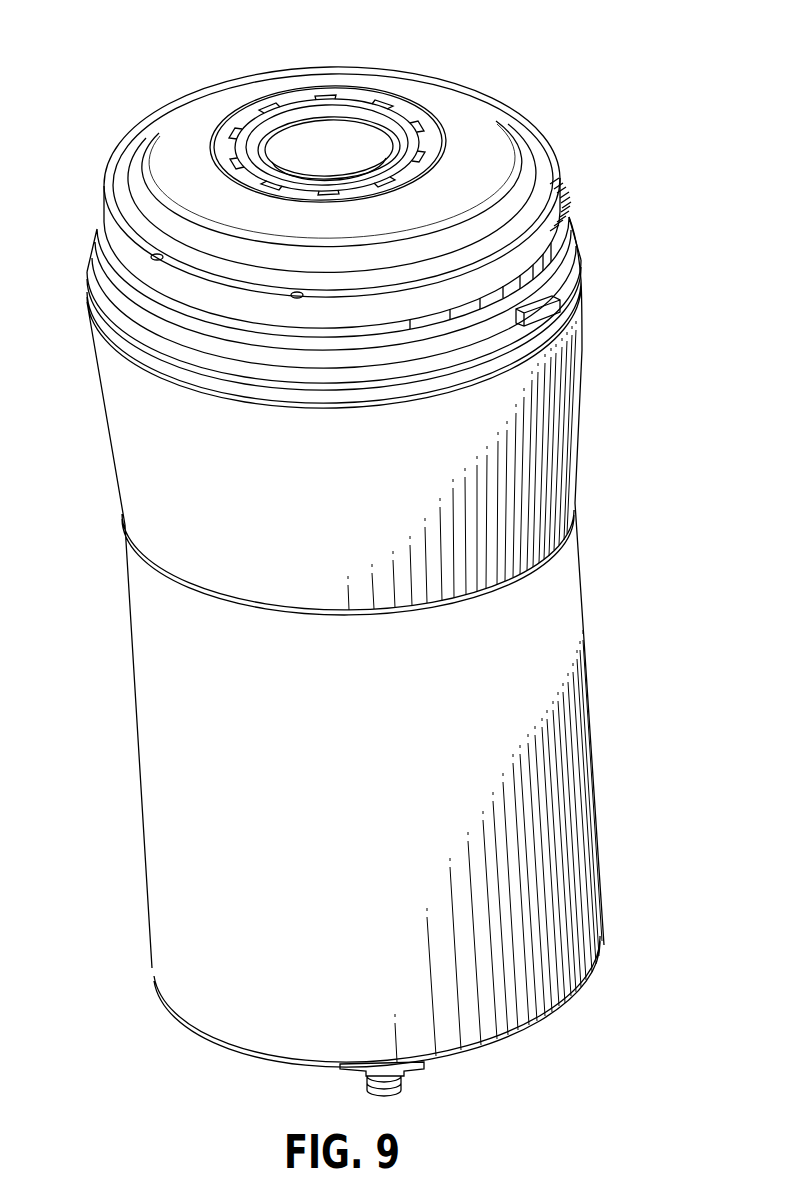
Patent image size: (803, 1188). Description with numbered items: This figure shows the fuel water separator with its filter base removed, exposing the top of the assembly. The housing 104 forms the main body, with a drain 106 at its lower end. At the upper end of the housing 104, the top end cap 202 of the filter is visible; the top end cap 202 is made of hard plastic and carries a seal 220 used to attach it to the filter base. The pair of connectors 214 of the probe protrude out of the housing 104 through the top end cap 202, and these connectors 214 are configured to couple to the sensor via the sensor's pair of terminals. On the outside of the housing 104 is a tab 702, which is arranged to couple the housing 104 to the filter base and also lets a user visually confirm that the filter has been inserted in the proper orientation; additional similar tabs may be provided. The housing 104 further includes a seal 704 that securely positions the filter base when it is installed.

The housing 104 is at (598, 770).
The drain 106 is at (402, 1073).
The top end cap 202 is at (460, 120).
The pair of connectors 214 is at (158, 255).
The seal 220 is at (323, 100).
The tab 702 is at (561, 292).
The seal 704 is at (566, 200).